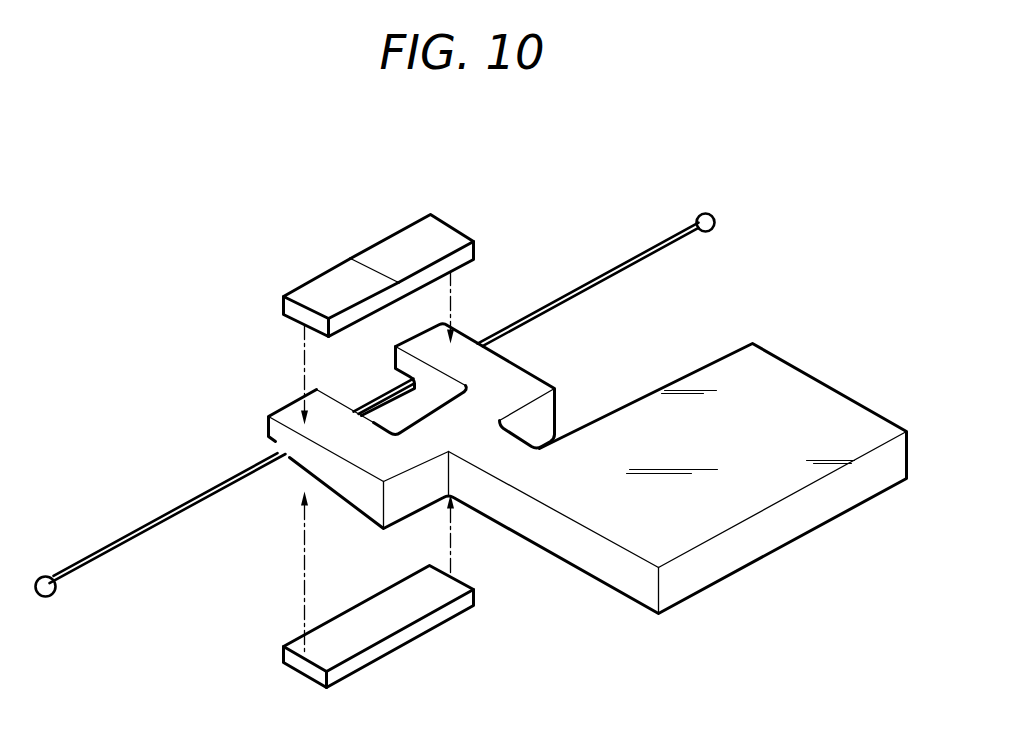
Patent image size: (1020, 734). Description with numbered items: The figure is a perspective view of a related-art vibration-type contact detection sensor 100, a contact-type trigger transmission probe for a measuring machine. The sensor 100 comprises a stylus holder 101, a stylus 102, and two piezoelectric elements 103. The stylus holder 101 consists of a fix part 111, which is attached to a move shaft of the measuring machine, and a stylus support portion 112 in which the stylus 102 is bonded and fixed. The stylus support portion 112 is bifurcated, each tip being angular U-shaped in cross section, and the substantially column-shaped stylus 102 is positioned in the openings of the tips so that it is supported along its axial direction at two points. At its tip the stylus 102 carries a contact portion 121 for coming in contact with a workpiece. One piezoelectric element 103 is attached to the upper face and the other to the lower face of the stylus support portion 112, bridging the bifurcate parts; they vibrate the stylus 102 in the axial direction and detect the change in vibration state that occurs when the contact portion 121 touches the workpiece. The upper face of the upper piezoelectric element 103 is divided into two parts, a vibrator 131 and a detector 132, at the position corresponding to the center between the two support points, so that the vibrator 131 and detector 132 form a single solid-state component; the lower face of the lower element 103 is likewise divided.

The vibration-type contact detection sensor 100 is at (243, 325).
The stylus holder 101 is at (780, 377).
The stylus 102 is at (176, 503).
The piezoelectric element 103 is at (378, 263).
The fix part 111 is at (867, 420).
The stylus support portion 112 is at (520, 373).
The contact portion 121 is at (43, 576).
The vibrator 131 is at (447, 237).
The detector 132 is at (320, 290).